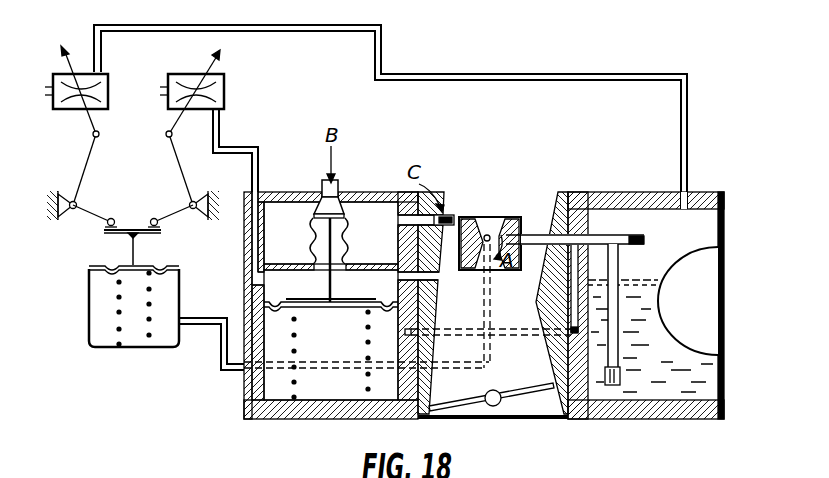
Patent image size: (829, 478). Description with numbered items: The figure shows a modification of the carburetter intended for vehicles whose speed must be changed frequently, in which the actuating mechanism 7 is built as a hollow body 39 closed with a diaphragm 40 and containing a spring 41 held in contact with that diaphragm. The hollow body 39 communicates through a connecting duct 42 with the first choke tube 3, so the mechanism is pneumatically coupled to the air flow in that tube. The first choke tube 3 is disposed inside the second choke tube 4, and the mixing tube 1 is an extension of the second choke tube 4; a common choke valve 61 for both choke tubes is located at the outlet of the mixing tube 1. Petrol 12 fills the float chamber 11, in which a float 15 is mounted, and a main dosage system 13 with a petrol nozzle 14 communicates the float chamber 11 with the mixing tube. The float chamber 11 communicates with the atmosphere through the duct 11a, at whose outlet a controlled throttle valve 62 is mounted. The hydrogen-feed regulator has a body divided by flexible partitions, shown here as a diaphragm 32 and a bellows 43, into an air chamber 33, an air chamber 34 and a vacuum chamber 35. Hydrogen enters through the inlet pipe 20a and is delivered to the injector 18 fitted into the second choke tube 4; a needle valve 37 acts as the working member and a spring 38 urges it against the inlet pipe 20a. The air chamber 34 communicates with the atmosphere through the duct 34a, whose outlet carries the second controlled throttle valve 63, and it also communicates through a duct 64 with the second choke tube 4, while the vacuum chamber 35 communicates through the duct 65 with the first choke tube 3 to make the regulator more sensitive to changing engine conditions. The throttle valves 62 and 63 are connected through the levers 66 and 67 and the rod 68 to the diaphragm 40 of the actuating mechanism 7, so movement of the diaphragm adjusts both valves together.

The mixing tube 1 is at (491, 403).
The first choke tube 3 is at (502, 216).
The second choke tube 4 is at (545, 203).
The actuating mechanism 7 is at (115, 308).
The float chamber 11 is at (725, 412).
The duct 11a is at (555, 72).
The petrol 12 is at (690, 408).
The main dosage system 13 is at (619, 261).
The petrol nozzle 14 is at (578, 197).
The float 15 is at (703, 258).
The injector 18 is at (448, 211).
The inlet pipe 20a is at (337, 184).
The diaphragm 32 is at (347, 307).
The air chamber 33 is at (275, 192).
The air chamber 34 is at (293, 270).
The duct 34a is at (254, 256).
The vacuum chamber 35 is at (317, 395).
The needle valve 37 is at (331, 281).
The spring 38 is at (363, 387).
The hollow body 39 is at (90, 300).
The diaphragm 40 is at (98, 264).
The spring 41 is at (148, 340).
The connecting duct 42 is at (224, 370).
The bellows 43 is at (345, 230).
The common choke valve 61 is at (536, 388).
The throttle valve 62 is at (108, 82).
The throttle valve 63 is at (180, 78).
The duct 64 is at (446, 280).
The duct 65 is at (516, 330).
The lever 66 is at (88, 158).
The lever 67 is at (178, 170).
The rod 68 is at (139, 246).